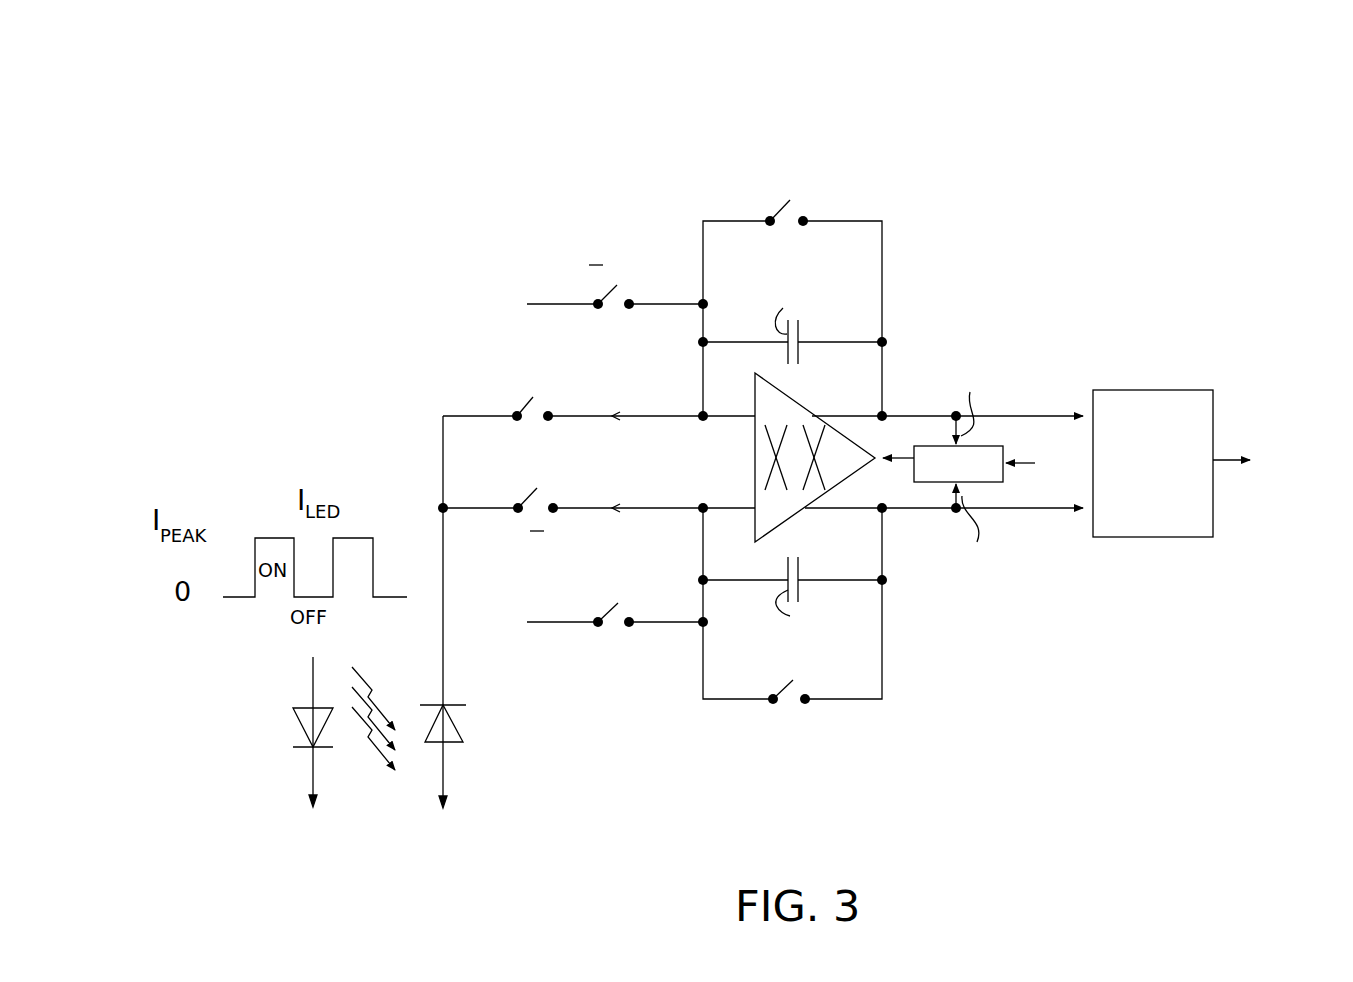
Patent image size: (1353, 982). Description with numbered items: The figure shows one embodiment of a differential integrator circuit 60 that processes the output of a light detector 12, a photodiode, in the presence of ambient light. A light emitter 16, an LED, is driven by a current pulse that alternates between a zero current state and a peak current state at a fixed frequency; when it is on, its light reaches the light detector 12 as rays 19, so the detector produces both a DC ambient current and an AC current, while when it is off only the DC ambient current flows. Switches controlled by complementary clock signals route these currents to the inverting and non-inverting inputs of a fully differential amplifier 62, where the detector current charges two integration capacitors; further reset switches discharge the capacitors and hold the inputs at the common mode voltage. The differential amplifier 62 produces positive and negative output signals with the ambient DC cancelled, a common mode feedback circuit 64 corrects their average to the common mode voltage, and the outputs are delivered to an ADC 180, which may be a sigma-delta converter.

The differential integrator circuit 60 is at (885, 411).
The differential amplifier 62 is at (852, 438).
The common mode feedback (CMFB) circuit 64 is at (922, 484).
The ADC 180 is at (1160, 390).
The light emitter 16 is at (300, 708).
The rays 19 is at (373, 684).
The light detector 12 is at (461, 744).